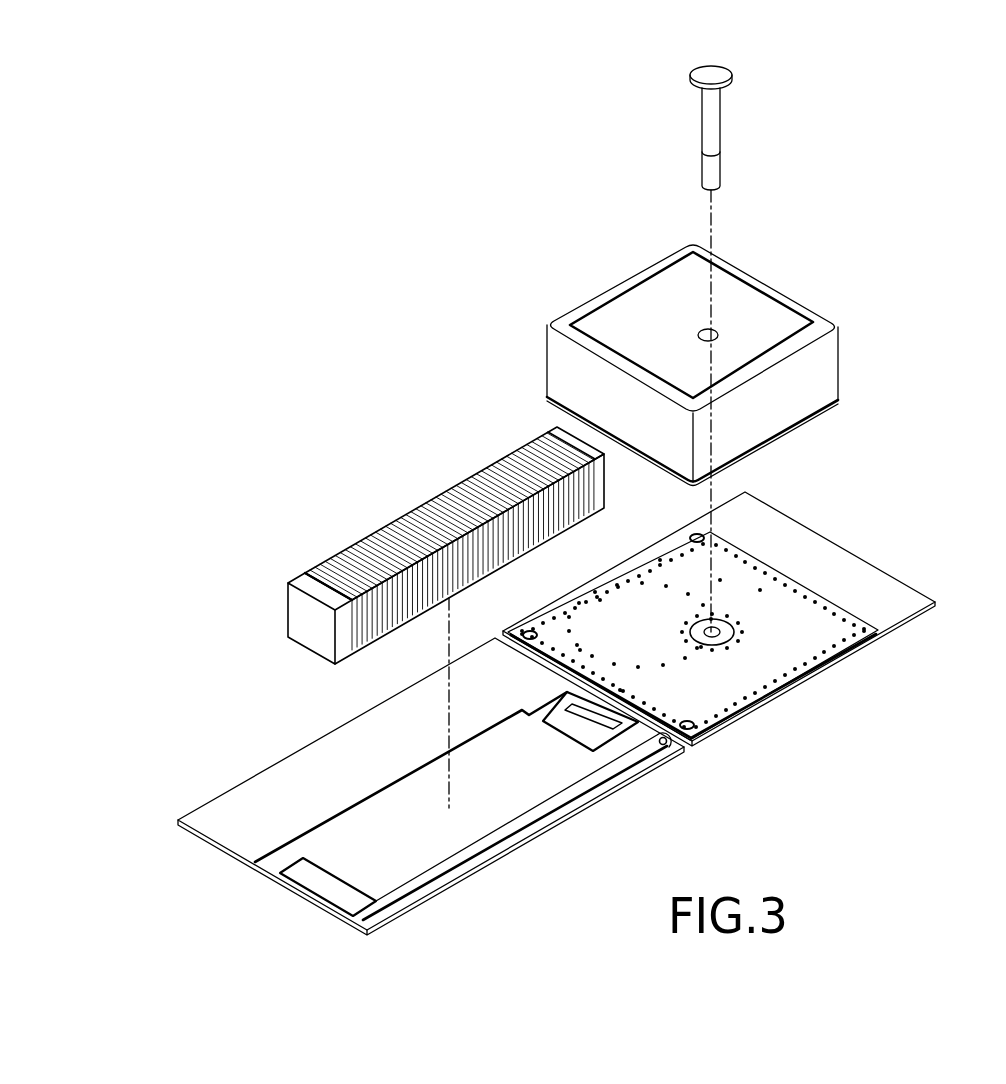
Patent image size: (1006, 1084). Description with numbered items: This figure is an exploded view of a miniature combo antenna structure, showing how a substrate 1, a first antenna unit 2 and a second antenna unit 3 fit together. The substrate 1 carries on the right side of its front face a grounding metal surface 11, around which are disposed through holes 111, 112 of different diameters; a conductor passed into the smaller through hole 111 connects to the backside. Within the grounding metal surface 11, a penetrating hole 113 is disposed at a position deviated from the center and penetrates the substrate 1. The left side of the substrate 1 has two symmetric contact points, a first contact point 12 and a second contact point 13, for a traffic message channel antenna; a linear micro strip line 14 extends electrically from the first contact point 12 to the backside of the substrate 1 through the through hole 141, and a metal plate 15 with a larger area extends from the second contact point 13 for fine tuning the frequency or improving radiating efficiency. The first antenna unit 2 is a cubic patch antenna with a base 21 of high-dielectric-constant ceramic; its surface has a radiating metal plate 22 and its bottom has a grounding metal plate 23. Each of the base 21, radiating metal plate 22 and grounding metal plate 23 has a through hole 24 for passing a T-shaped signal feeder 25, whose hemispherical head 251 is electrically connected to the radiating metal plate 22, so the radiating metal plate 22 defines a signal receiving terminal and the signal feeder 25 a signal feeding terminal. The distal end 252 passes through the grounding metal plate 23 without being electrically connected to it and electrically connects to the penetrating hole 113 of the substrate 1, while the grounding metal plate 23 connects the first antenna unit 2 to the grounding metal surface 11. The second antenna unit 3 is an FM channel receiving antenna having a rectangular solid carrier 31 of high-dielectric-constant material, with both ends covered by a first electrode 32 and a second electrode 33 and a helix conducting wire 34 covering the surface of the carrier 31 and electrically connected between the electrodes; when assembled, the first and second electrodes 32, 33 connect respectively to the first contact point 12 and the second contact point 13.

The circuit substrate 1 is at (719, 601).
The grounding metal surface 11 is at (708, 598).
The through hole 111 is at (802, 683).
The through hole 112 is at (710, 532).
The penetrating hole 113 is at (693, 626).
The first contact point 12 is at (310, 883).
The second contact point 13 is at (596, 736).
The micro strip line 14 is at (561, 826).
The through hole 141 is at (669, 746).
The metal plate 15 is at (468, 786).
The first antenna unit 2 is at (735, 340).
The base 21 is at (725, 265).
The radiating metal plate 22 is at (745, 302).
The grounding metal plate 23 is at (797, 421).
The through hole 24 is at (699, 334).
The signal feeder 25 is at (710, 139).
The hemispherical head 251 is at (690, 73).
The distal end 252 is at (705, 172).
The second antenna unit 3 is at (379, 502).
The carrier 31 is at (463, 480).
The first electrode 32 is at (297, 617).
The second electrode 33 is at (557, 433).
The helix conducting wire 34 is at (417, 517).